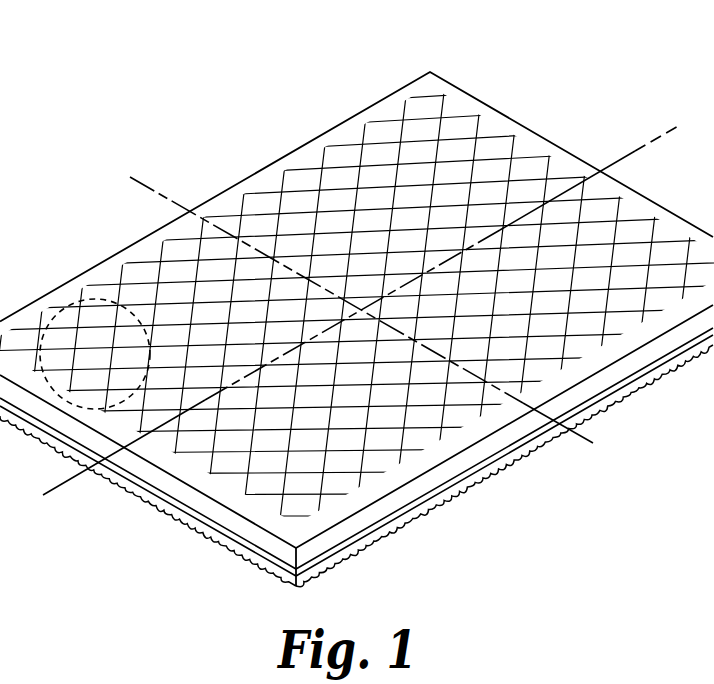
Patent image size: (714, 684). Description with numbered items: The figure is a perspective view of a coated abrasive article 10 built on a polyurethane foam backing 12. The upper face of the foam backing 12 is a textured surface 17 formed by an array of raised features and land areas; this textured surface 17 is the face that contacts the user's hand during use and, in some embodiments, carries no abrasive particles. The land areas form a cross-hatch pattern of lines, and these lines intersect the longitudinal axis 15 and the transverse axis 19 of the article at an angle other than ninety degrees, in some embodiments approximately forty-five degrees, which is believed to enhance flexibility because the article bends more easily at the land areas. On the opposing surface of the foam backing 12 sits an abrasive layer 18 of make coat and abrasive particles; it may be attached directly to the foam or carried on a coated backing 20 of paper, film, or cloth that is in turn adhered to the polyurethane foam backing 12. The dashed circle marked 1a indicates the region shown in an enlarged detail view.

The coated abrasive article 10 is at (607, 62).
The polyurethane foam backing 12 is at (250, 533).
The longitudinal axis 15 is at (638, 152).
The textured surface 17 is at (370, 128).
The abrasive layer 18 is at (313, 575).
The transverse axis 19 is at (138, 175).
The coated backing 20 is at (380, 530).
The detail view region 1a is at (80, 296).